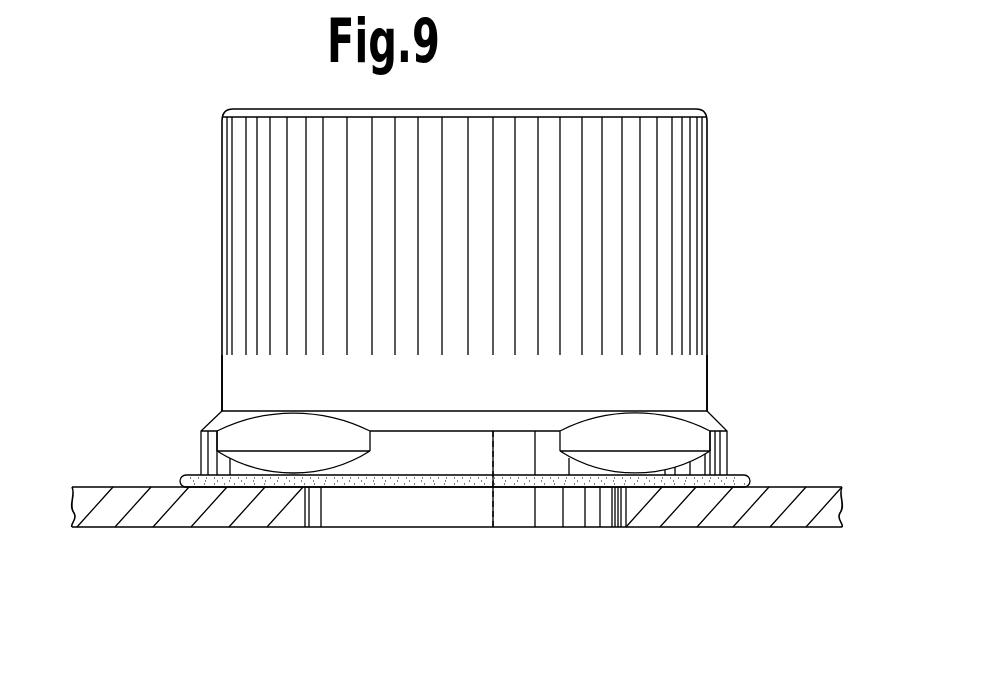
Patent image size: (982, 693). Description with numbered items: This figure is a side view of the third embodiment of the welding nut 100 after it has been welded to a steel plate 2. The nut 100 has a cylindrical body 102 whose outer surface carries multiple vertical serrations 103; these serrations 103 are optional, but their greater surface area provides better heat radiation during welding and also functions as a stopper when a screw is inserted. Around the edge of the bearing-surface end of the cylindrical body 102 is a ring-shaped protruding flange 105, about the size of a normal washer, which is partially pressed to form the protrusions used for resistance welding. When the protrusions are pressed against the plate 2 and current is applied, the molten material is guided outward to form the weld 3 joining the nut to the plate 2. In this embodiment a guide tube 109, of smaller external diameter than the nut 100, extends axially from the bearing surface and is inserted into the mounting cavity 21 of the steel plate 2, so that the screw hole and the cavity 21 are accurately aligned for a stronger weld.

The welding nut 100 is at (622, 98).
The cylindrical body 102 is at (707, 195).
The vertical serrations 103 is at (232, 183).
The flange 105 is at (213, 420).
The weld 3 is at (740, 475).
The steel plate 2 is at (213, 519).
The mounting cavity 21 is at (308, 506).
The guide tube 109 is at (575, 515).